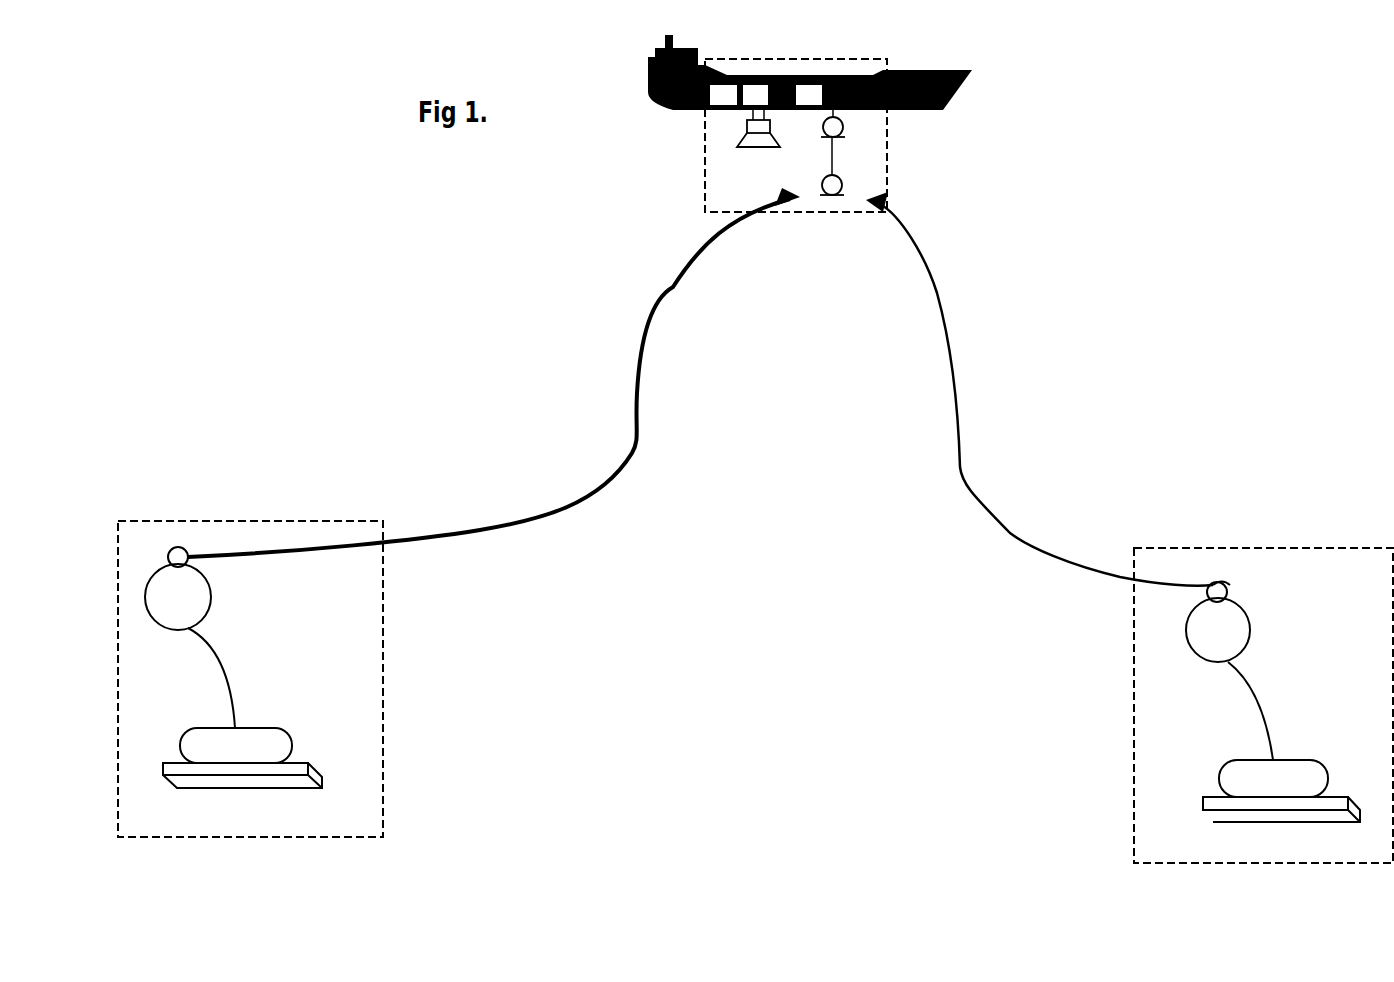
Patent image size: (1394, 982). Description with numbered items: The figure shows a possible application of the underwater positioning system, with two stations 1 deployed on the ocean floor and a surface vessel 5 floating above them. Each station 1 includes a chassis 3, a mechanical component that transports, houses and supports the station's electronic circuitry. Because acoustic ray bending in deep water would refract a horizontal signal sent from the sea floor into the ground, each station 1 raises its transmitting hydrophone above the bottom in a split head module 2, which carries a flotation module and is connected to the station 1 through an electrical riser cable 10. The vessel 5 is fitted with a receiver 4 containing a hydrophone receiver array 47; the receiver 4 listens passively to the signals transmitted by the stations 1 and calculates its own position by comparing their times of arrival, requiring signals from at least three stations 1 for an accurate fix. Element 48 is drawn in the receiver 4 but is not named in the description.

The station 1 is at (383, 805).
The split head module 2 is at (697, 604).
The chassis 3 is at (761, 775).
The receiver 4 is at (887, 183).
The vessel 5 is at (647, 72).
The electrical riser cable 10 is at (738, 694).
The hydrophone receiver array 47 is at (839, 151).
The transducer 48 is at (753, 136).